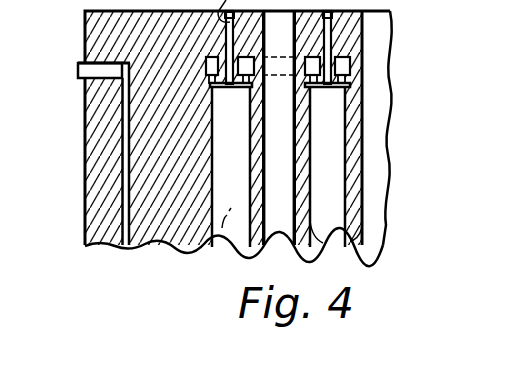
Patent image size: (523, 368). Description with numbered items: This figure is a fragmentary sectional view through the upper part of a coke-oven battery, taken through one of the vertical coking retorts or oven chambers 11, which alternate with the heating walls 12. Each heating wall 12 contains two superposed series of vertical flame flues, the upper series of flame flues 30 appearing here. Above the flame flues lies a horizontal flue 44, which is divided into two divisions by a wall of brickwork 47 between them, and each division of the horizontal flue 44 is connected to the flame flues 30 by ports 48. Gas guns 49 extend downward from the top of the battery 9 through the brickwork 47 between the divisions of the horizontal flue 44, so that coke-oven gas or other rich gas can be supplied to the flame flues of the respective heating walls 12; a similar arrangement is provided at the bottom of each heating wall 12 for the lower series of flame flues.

The burner 9 is at (420, 7).
The vertical coking retort 11 is at (377, 182).
The heating wall 12 is at (355, 251).
The upper series of vertical flame flues 30 is at (227, 218).
The horizontal flue 44 is at (340, 81).
The brickwork wall 47 is at (350, 60).
The port 48 is at (316, 88).
The gas gun 49 is at (331, 36).